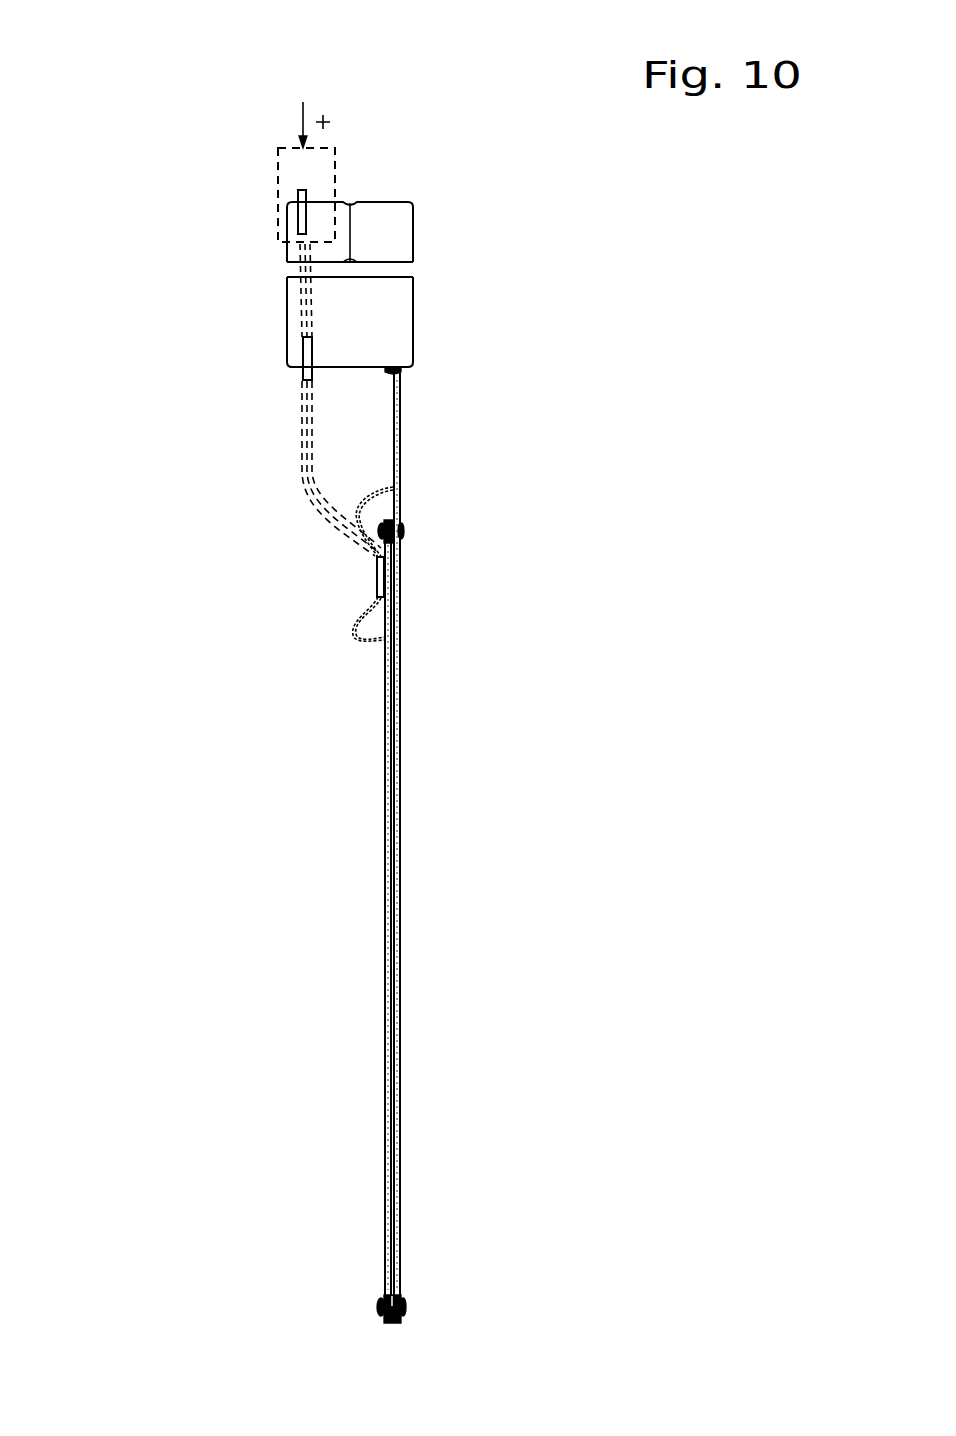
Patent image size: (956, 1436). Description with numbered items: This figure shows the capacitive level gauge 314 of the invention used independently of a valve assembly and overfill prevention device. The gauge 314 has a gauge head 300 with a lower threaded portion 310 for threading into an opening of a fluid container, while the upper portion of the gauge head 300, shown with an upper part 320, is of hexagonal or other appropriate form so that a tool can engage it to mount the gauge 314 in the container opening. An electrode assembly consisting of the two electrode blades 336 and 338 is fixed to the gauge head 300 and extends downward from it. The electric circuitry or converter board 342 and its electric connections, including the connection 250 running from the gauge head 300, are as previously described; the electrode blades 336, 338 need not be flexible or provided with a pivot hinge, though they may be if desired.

The gauge head 300 is at (380, 180).
The connector cap 320 is at (383, 233).
The lower threaded portion 310 is at (383, 332).
The electrical contact 250 is at (292, 368).
The converter board 342 is at (380, 573).
The gauge 314 is at (348, 877).
The electrode blade 338 is at (385, 1015).
The electrode blade 336 is at (400, 1010).